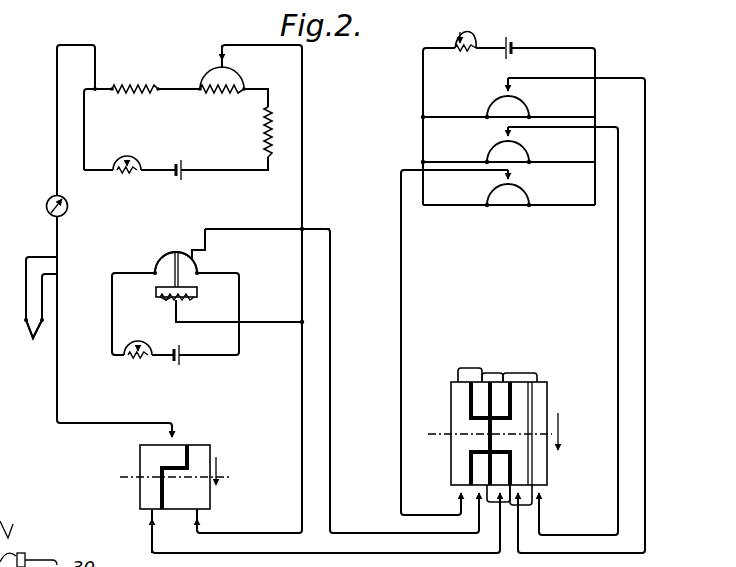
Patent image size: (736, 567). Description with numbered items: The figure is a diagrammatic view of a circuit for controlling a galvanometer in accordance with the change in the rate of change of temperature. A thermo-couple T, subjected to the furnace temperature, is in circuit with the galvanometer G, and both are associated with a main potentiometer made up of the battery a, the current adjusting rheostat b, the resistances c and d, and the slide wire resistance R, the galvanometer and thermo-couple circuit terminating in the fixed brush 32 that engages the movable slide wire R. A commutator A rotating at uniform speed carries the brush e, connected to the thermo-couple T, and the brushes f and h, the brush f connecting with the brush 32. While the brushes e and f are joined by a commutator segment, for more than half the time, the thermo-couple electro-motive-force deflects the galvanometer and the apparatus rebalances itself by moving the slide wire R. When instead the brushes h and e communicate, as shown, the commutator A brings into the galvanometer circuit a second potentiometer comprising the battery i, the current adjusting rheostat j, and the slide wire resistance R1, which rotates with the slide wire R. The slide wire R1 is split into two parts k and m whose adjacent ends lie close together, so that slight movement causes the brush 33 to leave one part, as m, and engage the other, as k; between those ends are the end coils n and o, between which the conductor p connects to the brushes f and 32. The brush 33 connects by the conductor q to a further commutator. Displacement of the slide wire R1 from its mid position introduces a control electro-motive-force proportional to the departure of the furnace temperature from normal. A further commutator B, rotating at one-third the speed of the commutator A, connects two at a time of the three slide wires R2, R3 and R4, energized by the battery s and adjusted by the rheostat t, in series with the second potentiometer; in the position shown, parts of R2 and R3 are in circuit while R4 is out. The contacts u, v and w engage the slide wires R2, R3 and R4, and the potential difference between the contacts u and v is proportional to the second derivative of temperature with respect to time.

The fixed brush 32 is at (224, 64).
The resistance d is at (135, 88).
The slide wire resistance R is at (240, 80).
The resistance c is at (272, 130).
The battery a is at (181, 164).
The current adjusting rheostat b is at (121, 172).
The galvanometer G is at (66, 211).
The thermo-couple T is at (30, 330).
The brush 33 is at (176, 251).
The slide wire resistance R1 is at (193, 250).
The conductor q is at (250, 229).
The slide wire part m is at (161, 259).
The slide wire part k is at (197, 266).
The end coil n is at (194, 300).
The end coil o is at (168, 303).
The conductor p is at (225, 323).
The battery i is at (180, 352).
The current adjusting rheostat j is at (130, 358).
The brush e is at (175, 442).
The commutator A is at (210, 450).
The brush h is at (148, 513).
The brush f is at (201, 517).
The rheostat t is at (456, 50).
The battery s is at (512, 45).
The contact u is at (504, 89).
The slide wire R2 is at (528, 104).
The contact v is at (504, 134).
The slide wire R3 is at (528, 149).
The contact w is at (504, 181).
The slide wire R4 is at (528, 192).
The commutator B is at (451, 407).